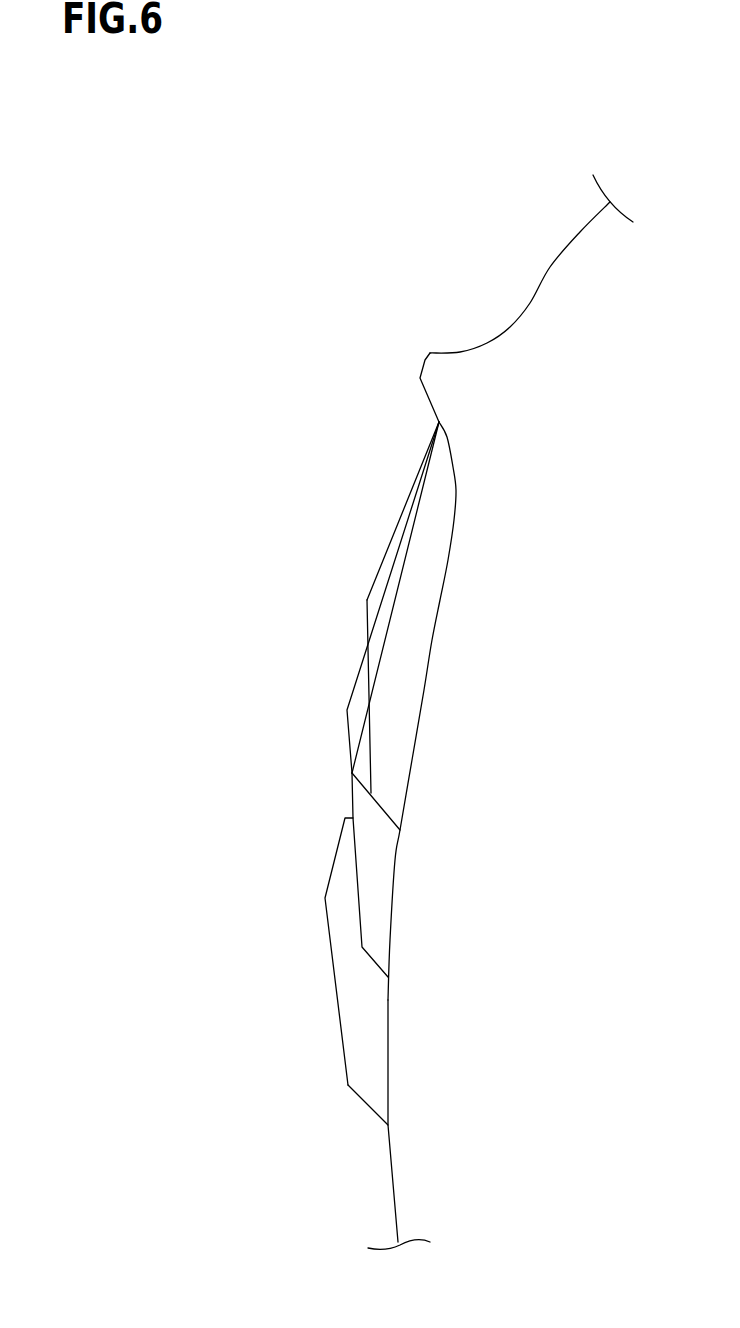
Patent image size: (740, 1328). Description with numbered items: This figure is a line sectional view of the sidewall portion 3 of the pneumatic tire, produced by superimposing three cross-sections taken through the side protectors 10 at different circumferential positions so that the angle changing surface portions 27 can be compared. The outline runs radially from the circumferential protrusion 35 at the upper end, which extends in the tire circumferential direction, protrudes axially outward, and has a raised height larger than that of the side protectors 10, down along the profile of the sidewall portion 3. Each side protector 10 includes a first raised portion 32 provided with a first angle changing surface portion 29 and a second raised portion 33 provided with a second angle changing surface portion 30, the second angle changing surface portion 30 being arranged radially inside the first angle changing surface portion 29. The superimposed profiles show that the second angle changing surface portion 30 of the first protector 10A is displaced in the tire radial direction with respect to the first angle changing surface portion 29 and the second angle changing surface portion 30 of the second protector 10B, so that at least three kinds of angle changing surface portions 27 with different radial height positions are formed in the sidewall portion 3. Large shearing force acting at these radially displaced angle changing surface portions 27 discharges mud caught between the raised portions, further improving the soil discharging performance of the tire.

The sidewall portion 3 is at (240, 500).
The side protector 10 is at (448, 752).
The first protector 10A is at (378, 875).
The second protector 10B is at (442, 618).
The angle changing surface portion 27 is at (325, 898).
The first angle changing surface portion 29 is at (360, 597).
The second angle changing surface portion 30 is at (337, 713).
The first raised portion 32 is at (430, 535).
The second raised portion 33 is at (365, 1035).
The circumferential protrusion 35 is at (423, 363).